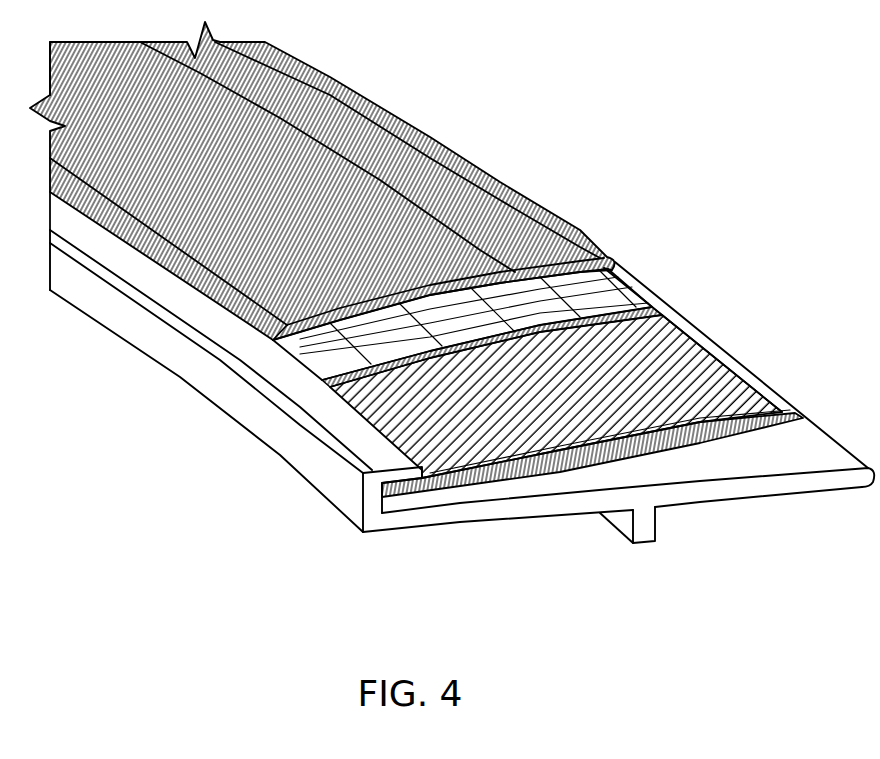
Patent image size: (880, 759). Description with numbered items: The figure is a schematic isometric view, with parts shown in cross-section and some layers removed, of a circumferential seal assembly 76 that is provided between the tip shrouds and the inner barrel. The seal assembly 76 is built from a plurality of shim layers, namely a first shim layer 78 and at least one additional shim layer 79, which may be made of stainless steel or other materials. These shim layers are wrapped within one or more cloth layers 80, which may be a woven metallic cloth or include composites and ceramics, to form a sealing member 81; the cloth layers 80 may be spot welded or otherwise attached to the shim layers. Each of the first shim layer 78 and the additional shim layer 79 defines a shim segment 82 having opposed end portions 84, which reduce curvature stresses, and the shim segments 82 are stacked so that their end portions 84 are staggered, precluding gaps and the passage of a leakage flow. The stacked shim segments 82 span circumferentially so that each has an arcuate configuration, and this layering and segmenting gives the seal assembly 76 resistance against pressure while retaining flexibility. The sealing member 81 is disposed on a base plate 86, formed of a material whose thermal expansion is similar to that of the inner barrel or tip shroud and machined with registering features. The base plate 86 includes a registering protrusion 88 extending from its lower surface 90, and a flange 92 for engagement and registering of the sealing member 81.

The circumferential seal assembly 76 is at (646, 132).
The first shim layer 78 is at (637, 282).
The additional shim layer 79 is at (720, 347).
The cloth layers 80 is at (534, 201).
The sealing member 81 is at (737, 278).
The shim segment 82 is at (743, 363).
The end portions 84 is at (622, 315).
The base plate 86 is at (507, 517).
The registering protrusion 88 is at (637, 545).
The lower surface 90 is at (743, 498).
The flange 92 is at (398, 474).